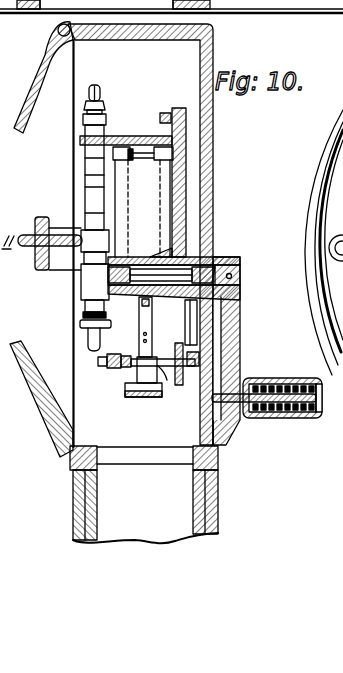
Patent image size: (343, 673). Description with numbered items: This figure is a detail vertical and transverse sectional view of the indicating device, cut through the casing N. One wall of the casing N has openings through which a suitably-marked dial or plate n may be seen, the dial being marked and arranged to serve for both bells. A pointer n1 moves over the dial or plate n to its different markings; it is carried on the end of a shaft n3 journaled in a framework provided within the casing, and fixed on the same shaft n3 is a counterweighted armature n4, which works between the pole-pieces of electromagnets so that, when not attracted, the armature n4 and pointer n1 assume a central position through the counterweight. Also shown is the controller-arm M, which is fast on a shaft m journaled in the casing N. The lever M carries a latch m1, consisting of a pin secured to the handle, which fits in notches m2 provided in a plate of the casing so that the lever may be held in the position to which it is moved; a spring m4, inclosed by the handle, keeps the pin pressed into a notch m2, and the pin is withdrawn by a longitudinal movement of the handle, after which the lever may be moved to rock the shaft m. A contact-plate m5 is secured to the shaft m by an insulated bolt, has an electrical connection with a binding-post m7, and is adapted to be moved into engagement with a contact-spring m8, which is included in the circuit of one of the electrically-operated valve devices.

The casing N is at (121, 282).
The dial or plate n is at (292, 0).
The pointer n1 is at (203, 315).
The shaft n3 is at (163, 380).
The counterweighted armature n4 is at (140, 338).
The controller-arm M is at (278, 368).
The shaft m is at (200, 271).
The latch m1 is at (223, 400).
The notches m2 is at (213, 396).
The spring m4 is at (280, 410).
The contact-plate m5 is at (95, 243).
The binding-post m7 is at (85, 311).
The contact-spring m8 is at (100, 197).